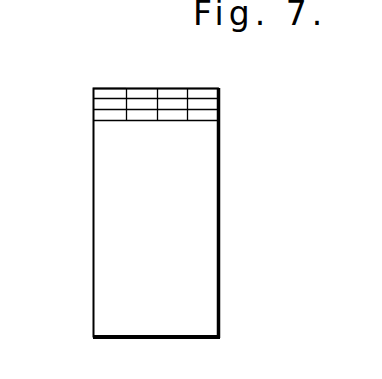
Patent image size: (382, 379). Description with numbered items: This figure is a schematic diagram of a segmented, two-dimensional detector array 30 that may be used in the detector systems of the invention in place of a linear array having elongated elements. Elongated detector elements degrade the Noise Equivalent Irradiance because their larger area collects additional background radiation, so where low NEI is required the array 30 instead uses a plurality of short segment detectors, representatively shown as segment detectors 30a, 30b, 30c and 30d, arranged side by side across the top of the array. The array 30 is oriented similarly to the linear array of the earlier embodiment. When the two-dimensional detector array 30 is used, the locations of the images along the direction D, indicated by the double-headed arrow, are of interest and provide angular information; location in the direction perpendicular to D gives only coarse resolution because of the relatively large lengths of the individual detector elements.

The two-dimensional detector array 30 is at (83, 199).
The short segment detector 30a is at (108, 90).
The short segment detector 30b is at (145, 90).
The short segment detector 30c is at (178, 90).
The fourth filter segment 30d is at (210, 90).
The direction D is at (257, 170).